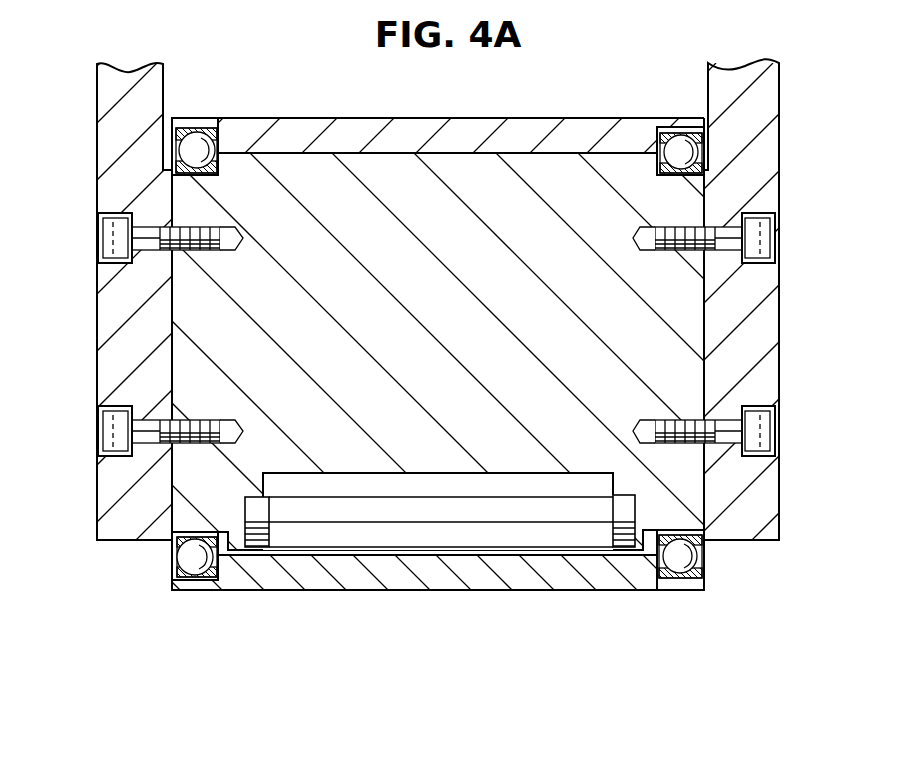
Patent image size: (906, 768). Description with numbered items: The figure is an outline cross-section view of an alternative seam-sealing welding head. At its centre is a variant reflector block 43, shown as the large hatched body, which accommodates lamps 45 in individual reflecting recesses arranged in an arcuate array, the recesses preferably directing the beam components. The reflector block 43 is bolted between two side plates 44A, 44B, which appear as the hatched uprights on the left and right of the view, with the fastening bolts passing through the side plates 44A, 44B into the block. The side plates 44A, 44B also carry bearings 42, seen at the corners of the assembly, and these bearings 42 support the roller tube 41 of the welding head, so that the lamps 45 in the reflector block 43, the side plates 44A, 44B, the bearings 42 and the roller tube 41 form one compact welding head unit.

The roller tube 41 is at (565, 580).
The bearings 42 is at (197, 143).
The reflector block 43 is at (688, 317).
The side plate 44A is at (120, 153).
The side plate 44B is at (758, 118).
The lamps 45 is at (352, 545).